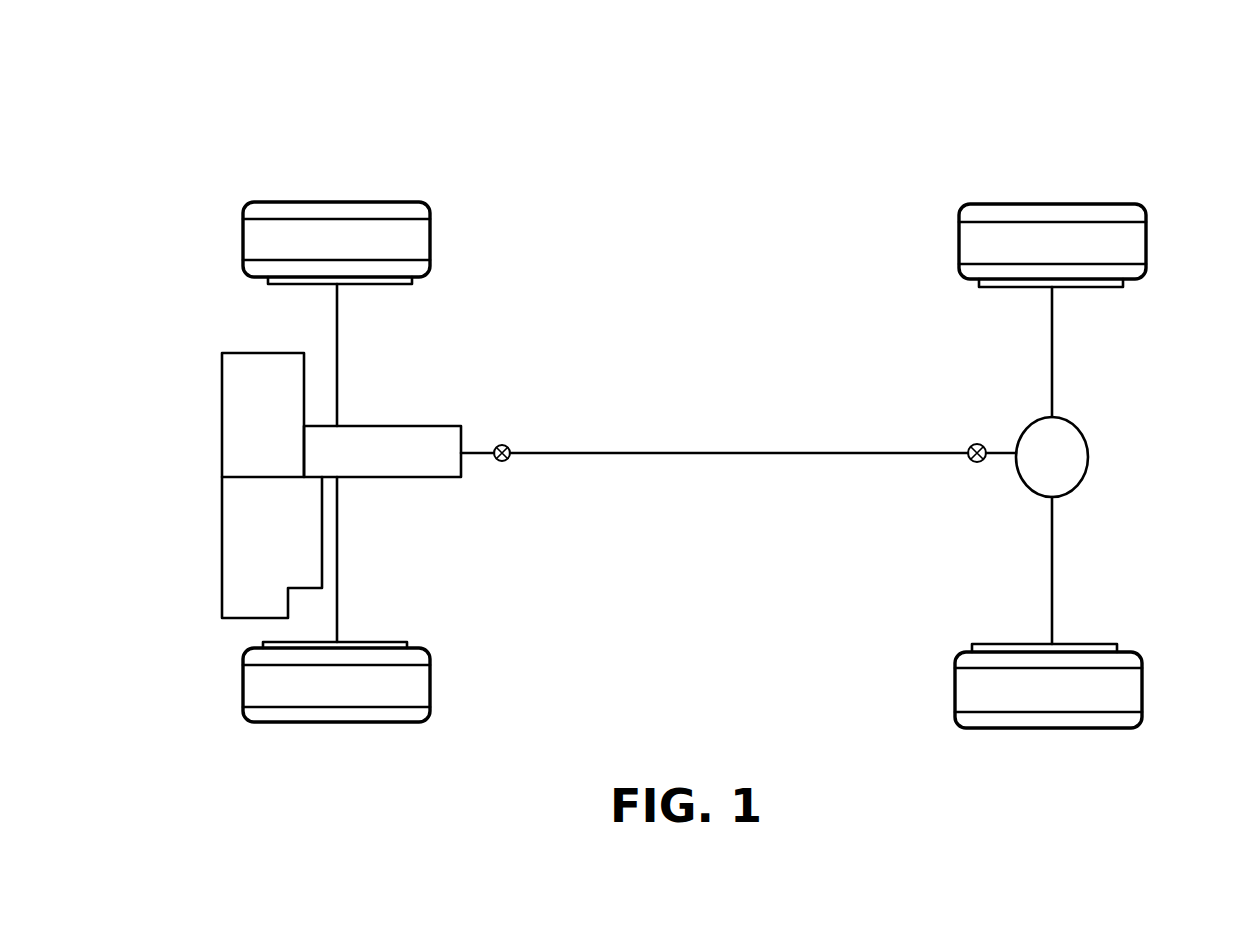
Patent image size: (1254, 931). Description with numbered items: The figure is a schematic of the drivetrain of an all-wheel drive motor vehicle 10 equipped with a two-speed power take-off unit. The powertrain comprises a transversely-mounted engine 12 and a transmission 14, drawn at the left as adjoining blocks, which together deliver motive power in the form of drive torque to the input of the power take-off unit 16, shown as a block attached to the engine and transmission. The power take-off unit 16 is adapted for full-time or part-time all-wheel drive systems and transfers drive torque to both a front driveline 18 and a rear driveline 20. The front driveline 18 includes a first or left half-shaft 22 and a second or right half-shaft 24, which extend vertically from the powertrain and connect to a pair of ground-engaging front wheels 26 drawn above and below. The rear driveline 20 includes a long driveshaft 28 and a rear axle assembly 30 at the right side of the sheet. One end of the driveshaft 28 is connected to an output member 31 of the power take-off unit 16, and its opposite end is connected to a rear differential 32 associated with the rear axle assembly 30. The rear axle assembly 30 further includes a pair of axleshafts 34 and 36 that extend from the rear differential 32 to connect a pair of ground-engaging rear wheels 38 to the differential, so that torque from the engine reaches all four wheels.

The all-wheel drive motor vehicle 10 is at (979, 131).
The engine 12 is at (221, 408).
The transmission 14 is at (221, 548).
The power take-off unit 16 is at (427, 425).
The front driveline 18 is at (371, 547).
The rear driveline 20 is at (851, 506).
The left half-shaft 22 is at (339, 588).
The right half-shaft 24 is at (339, 321).
The front wheels 26 is at (374, 215).
The driveshaft 28 is at (657, 453).
The rear axle assembly 30 is at (1029, 534).
The output member 31 is at (469, 456).
The rear differential 32 is at (1070, 467).
The axleshaft 34 is at (1053, 565).
The axleshaft 36 is at (1053, 338).
The rear wheels 38 is at (1088, 215).